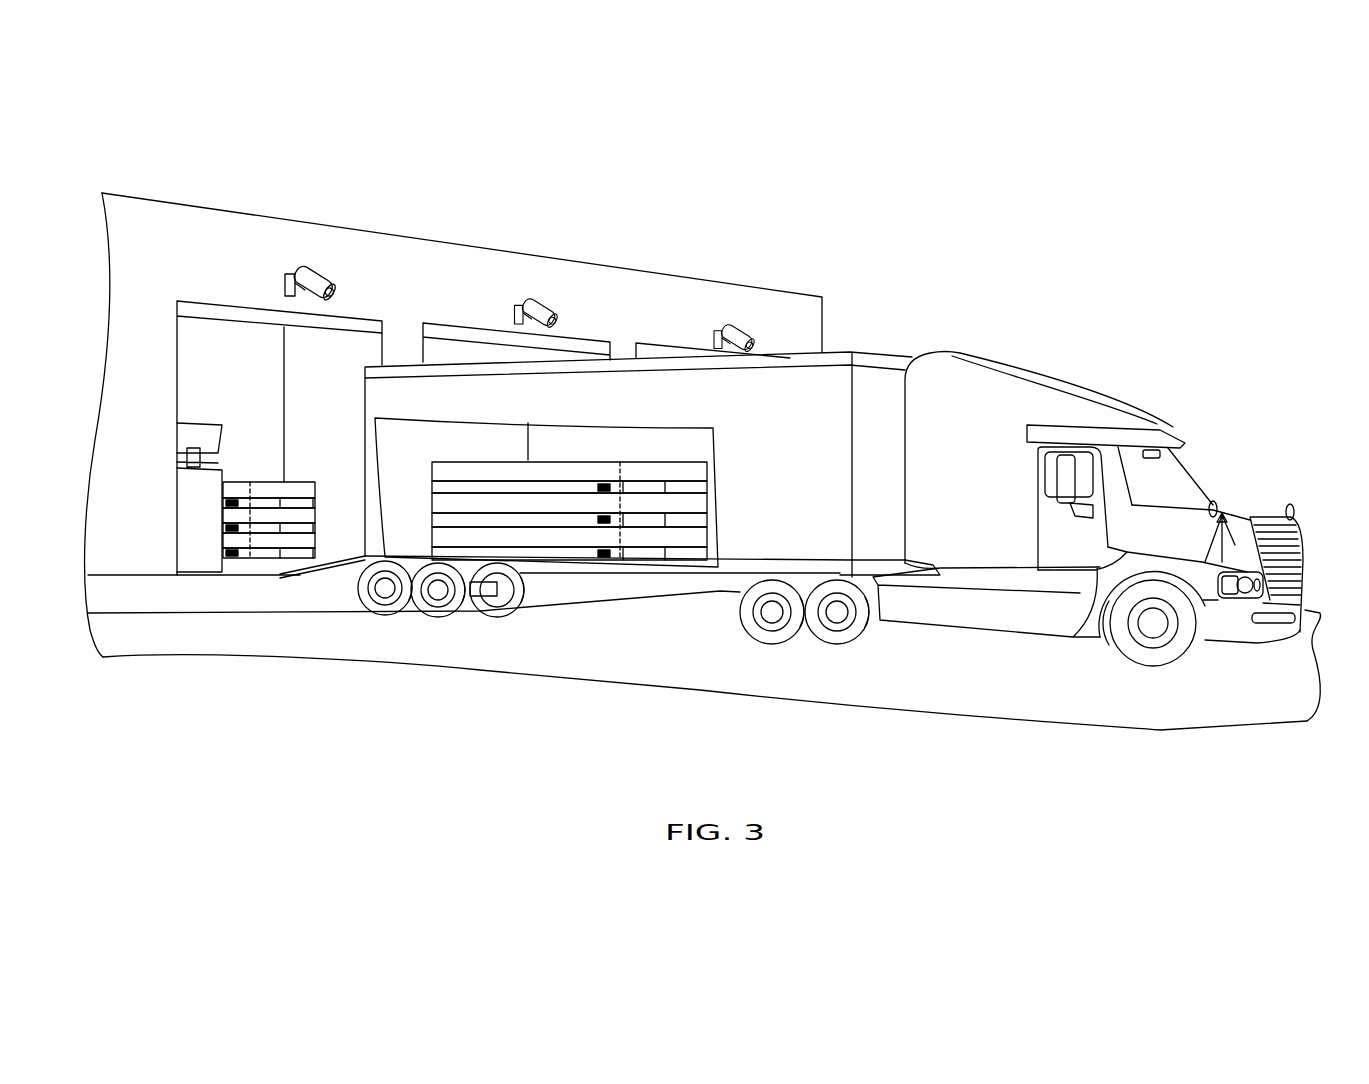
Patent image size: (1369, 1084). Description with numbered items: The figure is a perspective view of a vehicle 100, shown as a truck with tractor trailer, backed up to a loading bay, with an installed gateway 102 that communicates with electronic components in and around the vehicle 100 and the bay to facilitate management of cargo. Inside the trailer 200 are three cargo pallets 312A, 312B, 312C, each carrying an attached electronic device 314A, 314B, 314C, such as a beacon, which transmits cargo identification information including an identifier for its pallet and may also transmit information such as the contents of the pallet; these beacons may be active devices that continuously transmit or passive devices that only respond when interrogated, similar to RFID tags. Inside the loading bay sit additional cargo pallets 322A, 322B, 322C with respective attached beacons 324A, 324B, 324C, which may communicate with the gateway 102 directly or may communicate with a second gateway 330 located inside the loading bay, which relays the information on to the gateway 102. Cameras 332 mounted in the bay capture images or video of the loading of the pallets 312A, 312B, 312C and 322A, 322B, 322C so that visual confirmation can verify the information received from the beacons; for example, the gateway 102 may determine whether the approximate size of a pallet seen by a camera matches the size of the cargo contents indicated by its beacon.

The vehicle 100 is at (1085, 377).
The gateway 102 is at (1160, 468).
The trailer 200 is at (888, 355).
The cargo pallet 312A is at (440, 470).
The cargo pallet 312B is at (440, 502).
The cargo pallet 312C is at (440, 533).
The electronic device (beacon) 314A is at (612, 483).
The electronic device (beacon) 314B is at (612, 518).
The electronic device (beacon) 314C is at (612, 551).
The cargo pallet 322A is at (285, 490).
The cargo pallet 322B is at (270, 517).
The cargo pallet 322C is at (272, 548).
The beacon 324A is at (230, 503).
The beacon 324B is at (230, 527).
The beacon 324C is at (230, 552).
The second gateway 330 is at (183, 441).
The cameras 332 is at (332, 284).